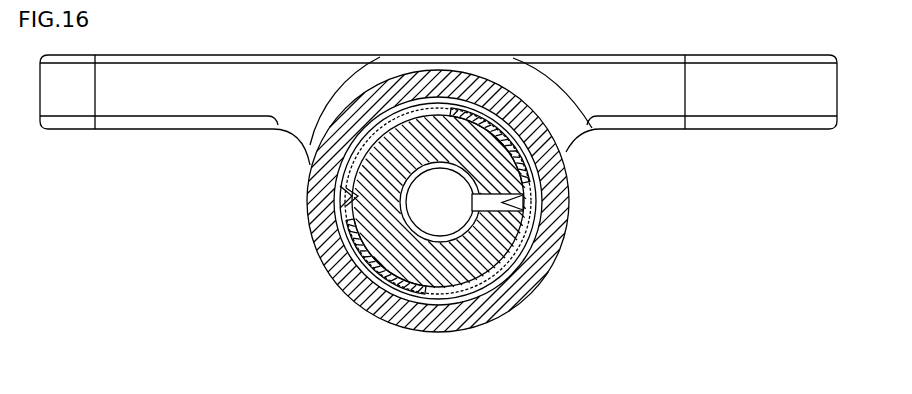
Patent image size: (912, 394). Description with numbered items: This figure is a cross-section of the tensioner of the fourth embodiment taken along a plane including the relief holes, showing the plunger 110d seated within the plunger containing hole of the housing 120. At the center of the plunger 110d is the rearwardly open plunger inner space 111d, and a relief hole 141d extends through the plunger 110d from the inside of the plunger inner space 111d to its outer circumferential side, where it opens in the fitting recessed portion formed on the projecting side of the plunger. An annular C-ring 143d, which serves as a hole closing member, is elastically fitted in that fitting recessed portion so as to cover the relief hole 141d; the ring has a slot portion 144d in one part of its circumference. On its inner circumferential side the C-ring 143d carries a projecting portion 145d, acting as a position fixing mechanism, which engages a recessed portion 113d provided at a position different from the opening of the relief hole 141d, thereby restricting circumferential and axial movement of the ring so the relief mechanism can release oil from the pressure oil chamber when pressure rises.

The housing 120 is at (508, 312).
The plunger inner space 111d is at (550, 263).
The plunger 110d is at (463, 318).
The C-ring 143d is at (368, 285).
The projecting portion 145d is at (342, 253).
The recessed portion 113d is at (355, 195).
The relief hole 141d is at (447, 204).
The slot portion 144d is at (436, 108).